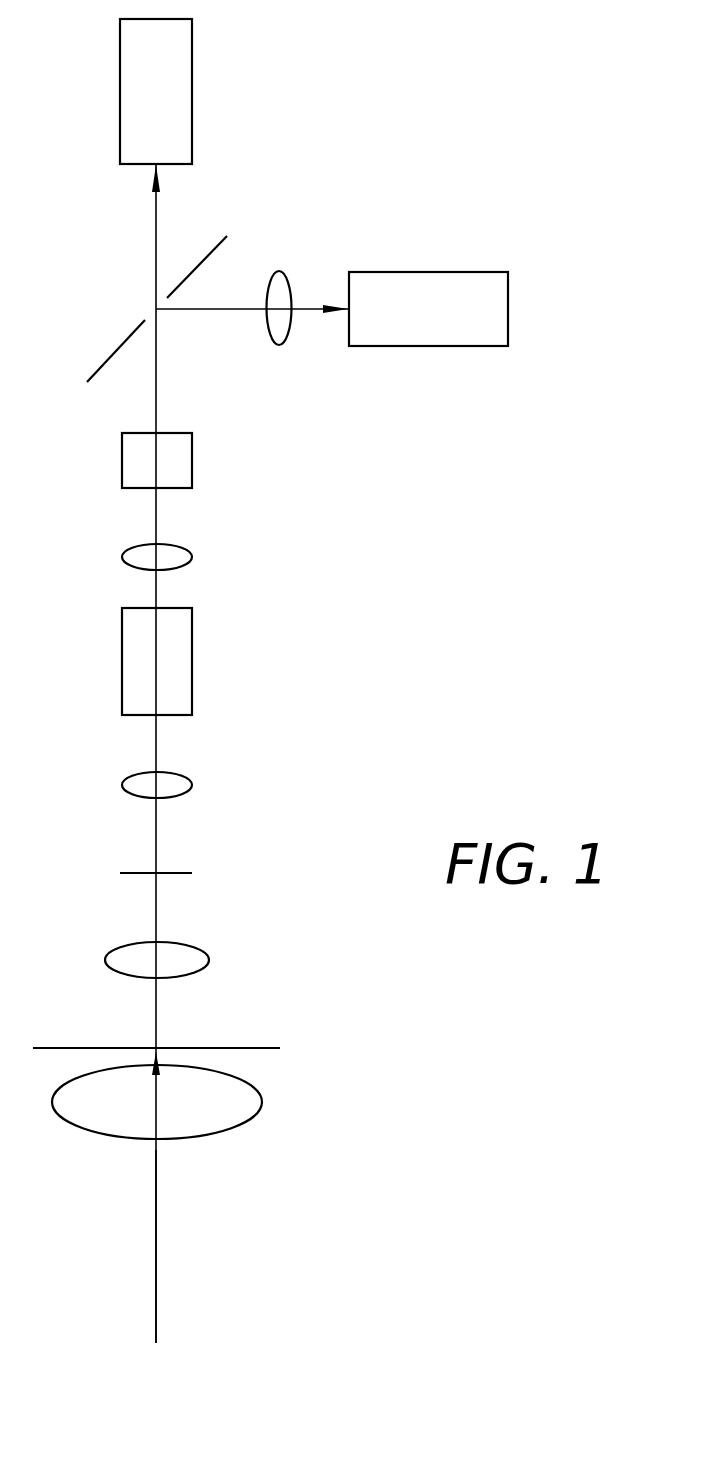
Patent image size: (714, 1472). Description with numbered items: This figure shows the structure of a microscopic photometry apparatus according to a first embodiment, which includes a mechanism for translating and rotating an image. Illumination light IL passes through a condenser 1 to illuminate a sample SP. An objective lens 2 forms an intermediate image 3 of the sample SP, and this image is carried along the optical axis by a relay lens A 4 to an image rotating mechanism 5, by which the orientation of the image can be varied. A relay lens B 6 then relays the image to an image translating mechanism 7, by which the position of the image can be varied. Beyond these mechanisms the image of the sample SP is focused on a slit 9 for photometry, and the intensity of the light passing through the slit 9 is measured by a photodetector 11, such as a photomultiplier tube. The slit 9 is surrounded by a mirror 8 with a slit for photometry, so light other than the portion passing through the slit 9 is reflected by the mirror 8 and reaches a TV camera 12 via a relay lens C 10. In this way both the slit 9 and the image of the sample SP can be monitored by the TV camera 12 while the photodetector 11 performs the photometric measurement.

The condenser 1 is at (262, 1102).
The objective lens 2 is at (210, 958).
The intermediate image of the sample 3 is at (183, 870).
The relay lens A 4 is at (192, 783).
The image rotating mechanism 5 is at (192, 653).
The relay lens B 6 is at (192, 555).
The image translating mechanism 7 is at (193, 460).
The mirror with a slit for photometry 8 is at (102, 360).
The slit for photometry 9 is at (150, 309).
The relay lens C 10 is at (278, 273).
The photodetector 11 is at (192, 75).
The TV camera 12 is at (508, 313).
The sample SP is at (255, 1048).
The illumination light IL is at (157, 1242).